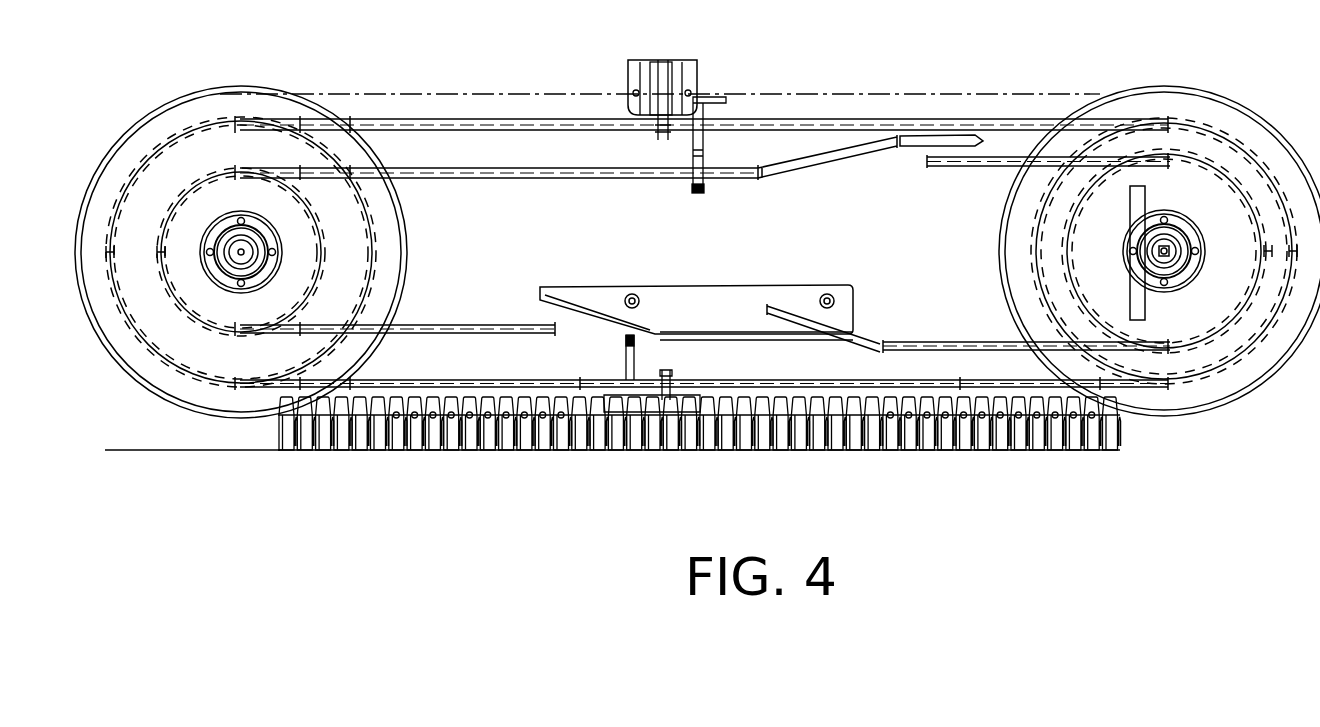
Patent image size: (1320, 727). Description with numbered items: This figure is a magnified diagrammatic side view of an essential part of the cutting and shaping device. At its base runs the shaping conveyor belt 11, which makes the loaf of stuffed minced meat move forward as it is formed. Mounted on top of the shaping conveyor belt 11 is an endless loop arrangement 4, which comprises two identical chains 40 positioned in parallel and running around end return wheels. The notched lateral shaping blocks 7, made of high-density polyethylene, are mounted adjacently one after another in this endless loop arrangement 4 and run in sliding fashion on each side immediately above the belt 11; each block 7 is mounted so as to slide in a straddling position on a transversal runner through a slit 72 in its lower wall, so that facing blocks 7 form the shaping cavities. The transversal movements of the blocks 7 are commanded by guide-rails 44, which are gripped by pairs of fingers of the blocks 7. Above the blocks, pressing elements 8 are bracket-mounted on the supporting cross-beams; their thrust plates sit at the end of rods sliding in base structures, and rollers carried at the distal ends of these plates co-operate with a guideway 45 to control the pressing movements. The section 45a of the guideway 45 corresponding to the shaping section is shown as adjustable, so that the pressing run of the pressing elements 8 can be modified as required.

The endless loop arrangement 4 is at (1191, 63).
The lateral shaping block 7 is at (628, 106).
The pressing element 8 is at (706, 97).
The shaping conveyor belt 11 is at (157, 450).
The chain 40 is at (905, 93).
The guide-rail 44 is at (800, 125).
The guideway 45 is at (490, 175).
The adjustable section of the guideway 45a is at (700, 330).
The slit 72 is at (453, 435).